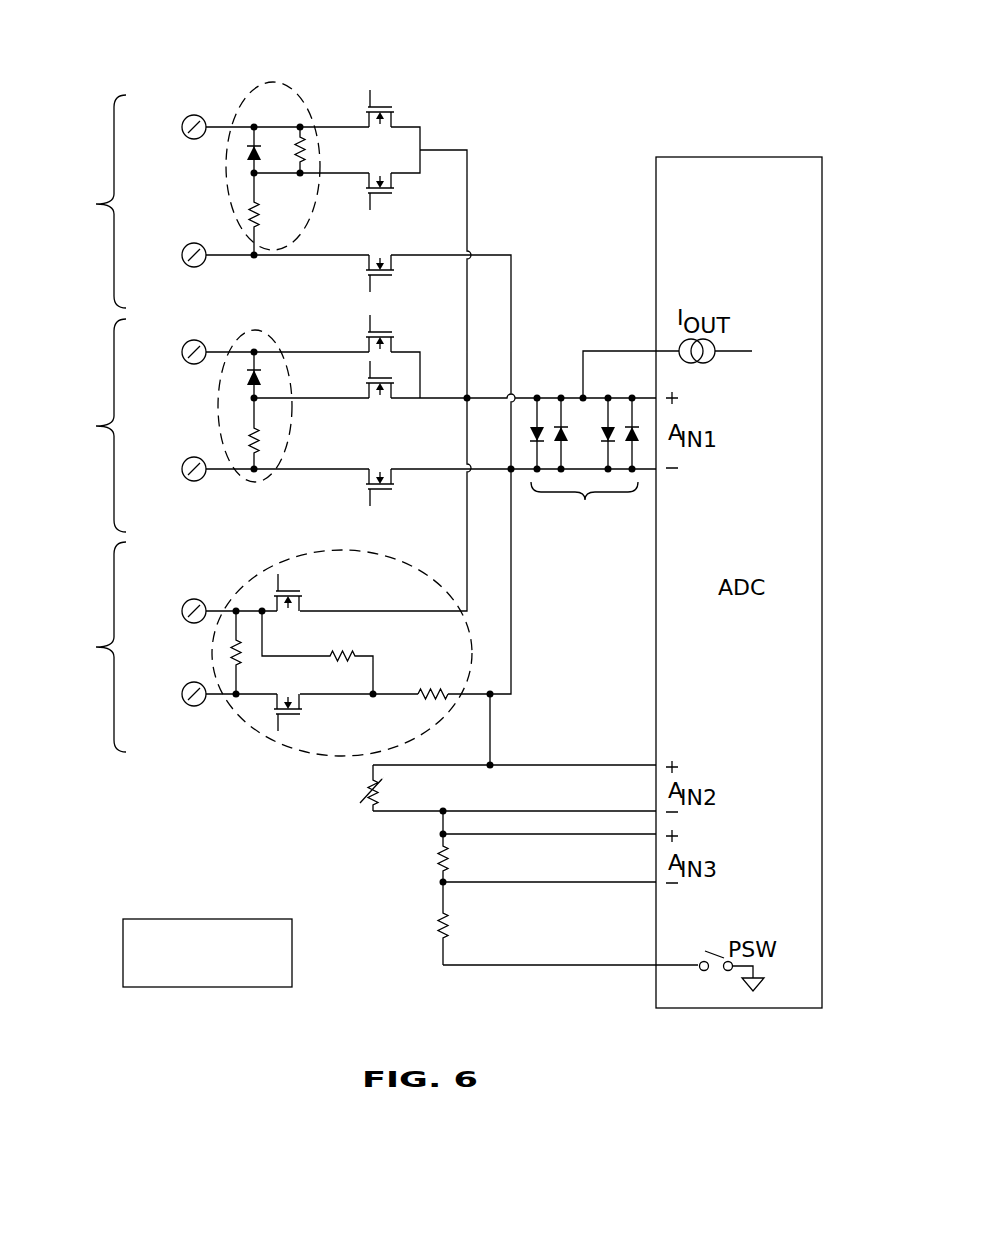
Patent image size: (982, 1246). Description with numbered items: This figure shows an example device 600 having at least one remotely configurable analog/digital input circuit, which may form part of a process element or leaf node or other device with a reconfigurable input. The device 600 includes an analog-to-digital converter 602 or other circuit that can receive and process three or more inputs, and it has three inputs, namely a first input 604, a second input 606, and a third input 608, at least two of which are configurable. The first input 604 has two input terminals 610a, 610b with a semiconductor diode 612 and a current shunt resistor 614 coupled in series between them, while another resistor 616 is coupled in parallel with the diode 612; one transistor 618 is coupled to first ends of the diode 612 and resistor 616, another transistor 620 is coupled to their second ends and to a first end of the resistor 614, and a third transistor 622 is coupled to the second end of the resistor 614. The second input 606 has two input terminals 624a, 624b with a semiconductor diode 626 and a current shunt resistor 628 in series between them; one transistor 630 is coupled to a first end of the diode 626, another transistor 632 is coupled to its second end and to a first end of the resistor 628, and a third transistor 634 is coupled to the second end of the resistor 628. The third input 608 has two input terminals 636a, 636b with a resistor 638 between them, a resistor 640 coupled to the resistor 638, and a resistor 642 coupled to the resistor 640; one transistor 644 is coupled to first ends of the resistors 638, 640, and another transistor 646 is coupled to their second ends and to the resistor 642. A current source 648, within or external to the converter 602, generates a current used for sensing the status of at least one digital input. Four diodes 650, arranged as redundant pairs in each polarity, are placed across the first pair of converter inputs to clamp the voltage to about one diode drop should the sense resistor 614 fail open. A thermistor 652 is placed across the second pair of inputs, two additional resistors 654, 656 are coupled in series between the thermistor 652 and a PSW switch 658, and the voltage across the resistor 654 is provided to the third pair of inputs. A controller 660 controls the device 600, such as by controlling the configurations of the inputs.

The device 600 is at (629, 65).
The analog-to-digital converter 602 is at (741, 157).
The first input 604 is at (85, 201).
The second input 606 is at (85, 425).
The third input 608 is at (85, 647).
The input terminal 610a is at (193, 115).
The input terminal 610b is at (193, 243).
The semiconductor diode 612 is at (244, 154).
The current shunt resistor 614 is at (289, 207).
The resistor 616 is at (313, 140).
The transistor 618 is at (375, 100).
The transistor 620 is at (383, 193).
The third transistor 622 is at (383, 279).
The input terminal 624a is at (193, 340).
The input terminal 624b is at (193, 457).
The semiconductor diode 626 is at (244, 378).
The current shunt resistor 628 is at (265, 432).
The transistor 630 is at (383, 317).
The transistor 632 is at (386, 396).
The third transistor 634 is at (383, 490).
The input terminal 636a is at (193, 599).
The input terminal 636b is at (194, 709).
The resistor 638 is at (226, 643).
The resistor 640 is at (353, 655).
The resistor 642 is at (445, 684).
The transistor 644 is at (293, 577).
The transistor 646 is at (293, 720).
The current source 648 is at (703, 363).
The diodes 650 is at (584, 466).
The thermistor 652 is at (360, 783).
The resistor 654 is at (437, 852).
The resistor 656 is at (437, 917).
The PSW switch 658 is at (718, 950).
The controller 660 is at (207, 918).